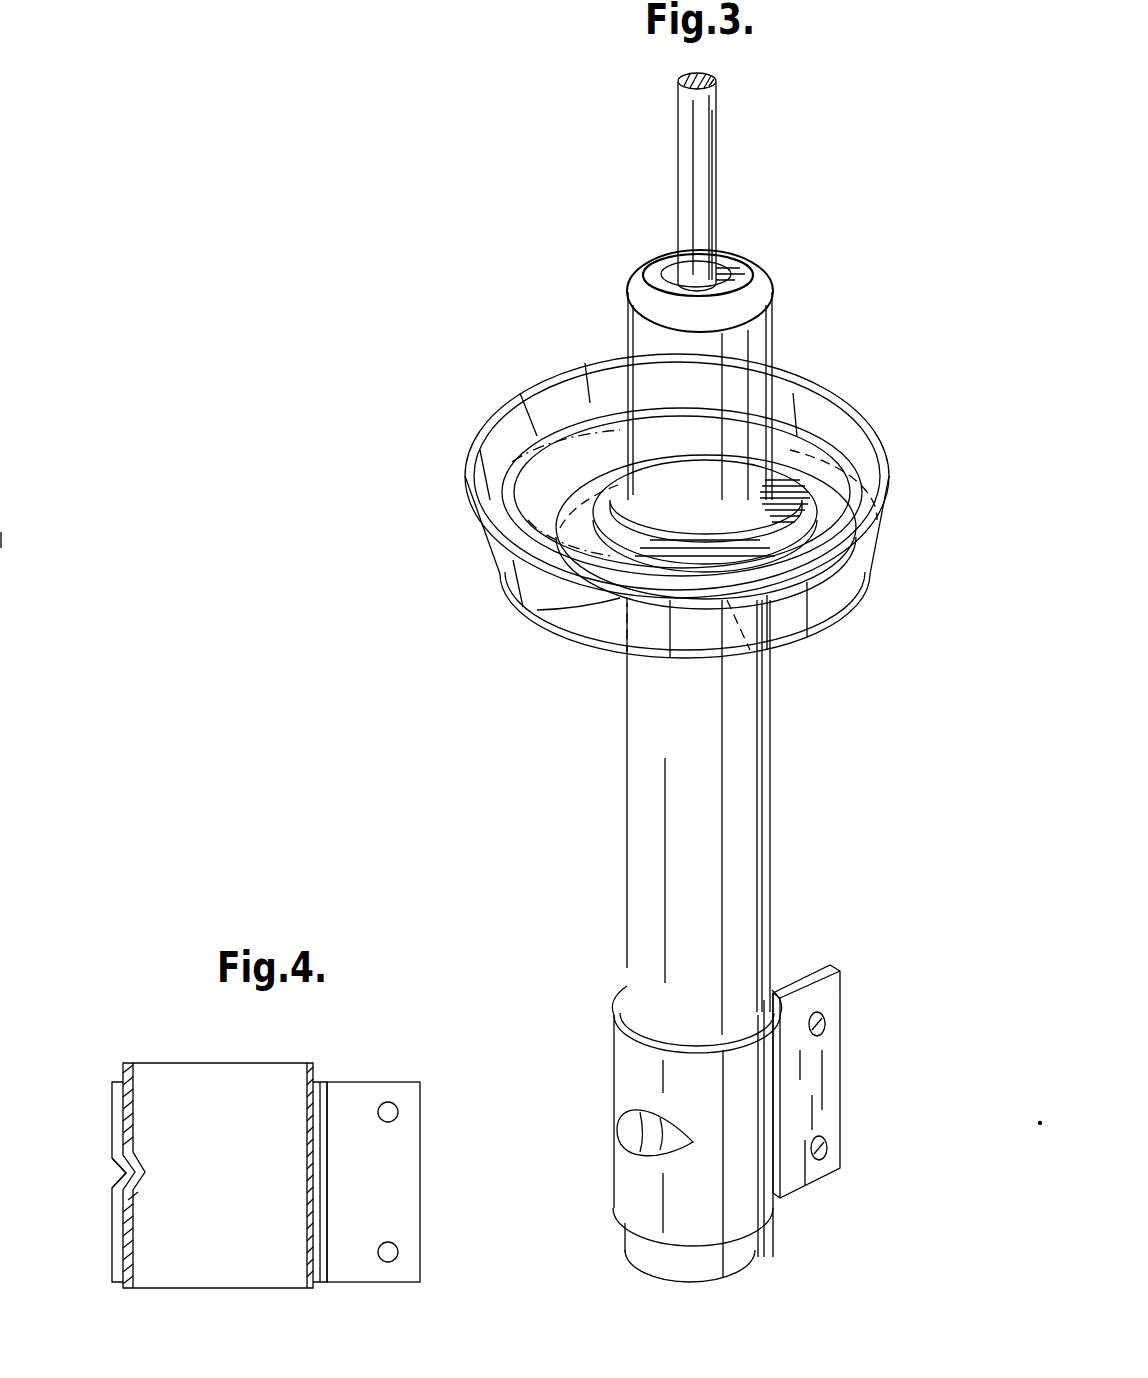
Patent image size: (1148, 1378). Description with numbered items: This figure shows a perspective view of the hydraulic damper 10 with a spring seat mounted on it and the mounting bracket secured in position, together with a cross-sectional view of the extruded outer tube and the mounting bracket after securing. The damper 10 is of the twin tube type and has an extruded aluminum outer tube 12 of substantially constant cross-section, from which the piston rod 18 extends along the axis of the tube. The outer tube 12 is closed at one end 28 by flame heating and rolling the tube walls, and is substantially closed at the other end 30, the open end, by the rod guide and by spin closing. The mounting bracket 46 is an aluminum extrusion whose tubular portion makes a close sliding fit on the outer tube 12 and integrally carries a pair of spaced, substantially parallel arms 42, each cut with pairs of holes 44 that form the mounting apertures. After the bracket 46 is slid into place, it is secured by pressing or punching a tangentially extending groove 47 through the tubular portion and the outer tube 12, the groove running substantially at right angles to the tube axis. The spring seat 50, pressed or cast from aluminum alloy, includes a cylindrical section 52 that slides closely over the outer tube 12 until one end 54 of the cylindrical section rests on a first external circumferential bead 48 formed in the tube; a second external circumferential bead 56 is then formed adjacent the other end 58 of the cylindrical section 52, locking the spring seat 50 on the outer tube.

In FIG. 3, the hydraulic damper 10 is at (586, 322).
In FIG. 3, the outer tube 12 is at (745, 358).
In FIG. 4, the outer tube 12 is at (313, 1063).
In FIG. 3, the piston rod 18 is at (703, 167).
In FIG. 3, the one end of outer tube 28 is at (740, 1277).
In FIG. 3, the other end of outer tube 30 is at (765, 278).
In FIG. 3, the spaced arms 42 is at (833, 1082).
In FIG. 4, the spaced arms 42 is at (400, 1190).
In FIG. 3, the holes 44 is at (826, 1148).
In FIG. 4, the holes 44 is at (398, 1113).
In FIG. 3, the mounting bracket 46 is at (771, 1114).
In FIG. 4, the mounting bracket 46 is at (294, 1143).
In FIG. 3, the groove 47 is at (630, 1128).
In FIG. 4, the groove 47 is at (112, 1175).
In FIG. 3, the first bead 48 is at (770, 665).
In FIG. 3, the spring seat 50 is at (838, 412).
In FIG. 3, the cylindrical section 52 is at (862, 512).
In FIG. 3, the one end of cylindrical section 54 is at (627, 595).
In FIG. 3, the second bead 56 is at (803, 470).
In FIG. 3, the other end of cylindrical section 58 is at (537, 610).